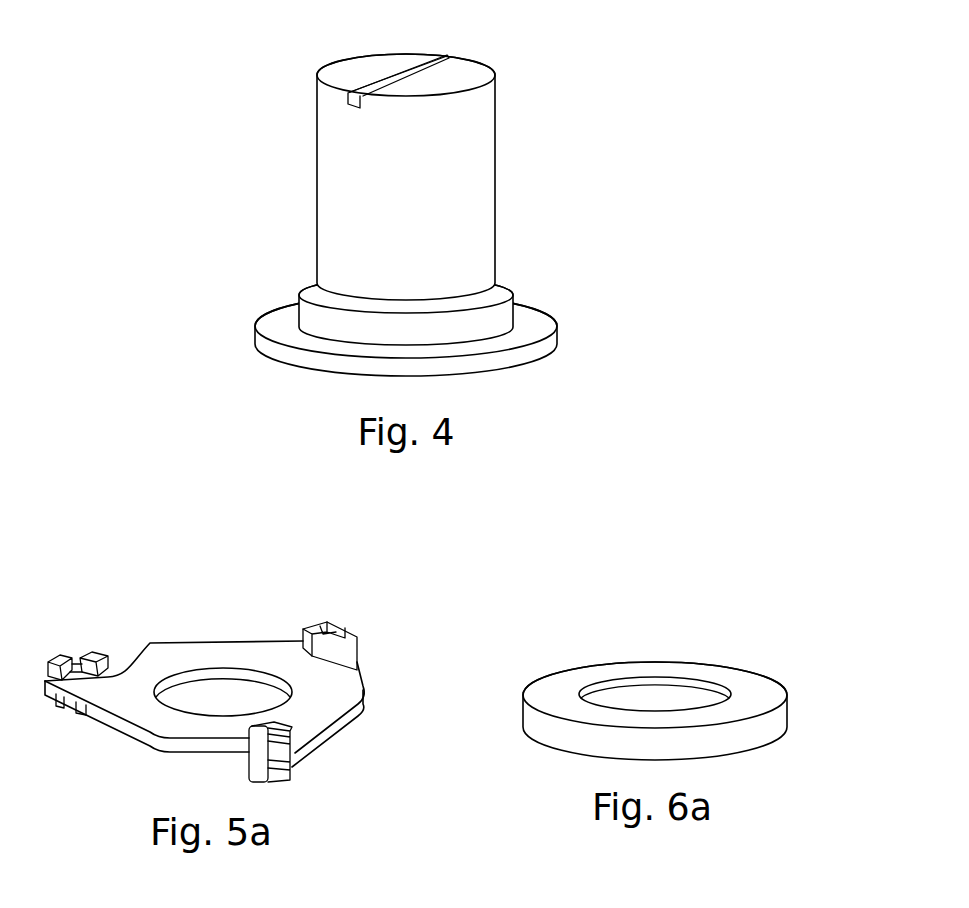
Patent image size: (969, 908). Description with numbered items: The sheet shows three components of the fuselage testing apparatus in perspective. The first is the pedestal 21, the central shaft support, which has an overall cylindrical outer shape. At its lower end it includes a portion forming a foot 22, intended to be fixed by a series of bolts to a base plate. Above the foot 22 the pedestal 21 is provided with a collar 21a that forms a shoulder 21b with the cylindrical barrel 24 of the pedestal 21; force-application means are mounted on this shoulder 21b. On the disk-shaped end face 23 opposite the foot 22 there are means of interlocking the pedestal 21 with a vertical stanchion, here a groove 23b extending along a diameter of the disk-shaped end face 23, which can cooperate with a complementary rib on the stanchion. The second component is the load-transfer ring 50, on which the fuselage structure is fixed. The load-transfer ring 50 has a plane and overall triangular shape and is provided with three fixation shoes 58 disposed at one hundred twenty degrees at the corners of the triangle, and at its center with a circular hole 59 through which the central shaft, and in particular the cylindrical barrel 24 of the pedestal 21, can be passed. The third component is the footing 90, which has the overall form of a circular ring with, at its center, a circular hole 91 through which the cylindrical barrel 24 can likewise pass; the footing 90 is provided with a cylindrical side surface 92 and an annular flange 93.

In FIG. 4, the pedestal 21 is at (448, 190).
In FIG. 4, the collar 21a is at (513, 296).
In FIG. 4, the shoulder 21b is at (498, 280).
In FIG. 4, the foot 22 is at (548, 318).
In FIG. 4, the disk-shaped end face 23 is at (432, 56).
In FIG. 4, the groove 23b is at (410, 72).
In FIG. 4, the cylindrical barrel 24 is at (478, 163).
In FIG. 5A, the load-transfer ring 50 is at (230, 689).
In FIG. 5A, the fixation shoes 58 is at (80, 660).
In FIG. 5A, the circular hole 59 is at (224, 681).
In FIG. 6A, the footing 90 is at (700, 699).
In FIG. 6A, the circular hole 91 is at (654, 682).
In FIG. 6A, the cylindrical side surface 92 is at (757, 738).
In FIG. 6A, the annular flange 93 is at (750, 684).